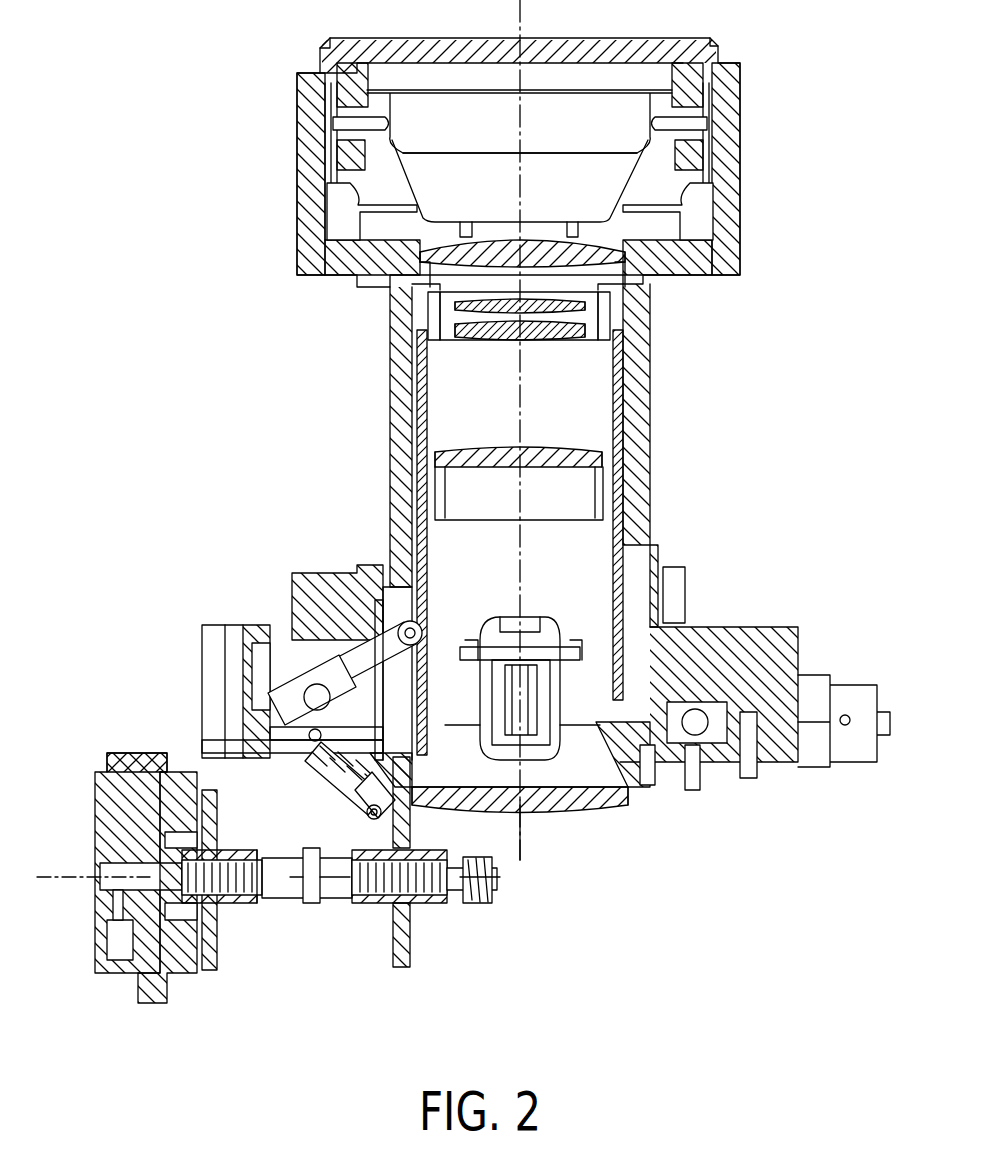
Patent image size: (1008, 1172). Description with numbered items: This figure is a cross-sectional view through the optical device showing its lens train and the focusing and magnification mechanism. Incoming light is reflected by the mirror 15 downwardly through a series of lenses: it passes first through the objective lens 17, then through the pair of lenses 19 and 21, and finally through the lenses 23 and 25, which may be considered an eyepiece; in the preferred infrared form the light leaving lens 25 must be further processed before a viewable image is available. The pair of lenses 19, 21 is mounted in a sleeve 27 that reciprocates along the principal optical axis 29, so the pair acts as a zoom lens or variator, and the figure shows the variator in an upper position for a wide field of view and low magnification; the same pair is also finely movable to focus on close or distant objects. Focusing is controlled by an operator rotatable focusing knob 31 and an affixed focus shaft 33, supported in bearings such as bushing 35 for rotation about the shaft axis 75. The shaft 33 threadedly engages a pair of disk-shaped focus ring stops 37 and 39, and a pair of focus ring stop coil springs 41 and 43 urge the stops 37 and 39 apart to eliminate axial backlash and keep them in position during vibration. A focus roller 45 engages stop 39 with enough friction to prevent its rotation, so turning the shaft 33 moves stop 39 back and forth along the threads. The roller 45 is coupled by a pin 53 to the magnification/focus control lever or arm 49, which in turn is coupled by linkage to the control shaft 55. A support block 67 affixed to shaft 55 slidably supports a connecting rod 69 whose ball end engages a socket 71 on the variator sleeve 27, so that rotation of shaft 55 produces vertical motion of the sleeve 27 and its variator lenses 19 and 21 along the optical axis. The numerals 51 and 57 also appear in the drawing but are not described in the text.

The mirror 15 is at (479, 135).
The objective lens 17 is at (660, 282).
The lens 19 is at (455, 302).
The lens 21 is at (460, 336).
The lens 23 is at (578, 452).
The lens 25 is at (608, 805).
The sleeve 27 is at (625, 380).
The principal optical axis 29 is at (525, 842).
The focusing knob 31 is at (100, 797).
The focus shaft 33 is at (433, 895).
The bushing 35 is at (493, 895).
The focus ring stop 37 is at (210, 960).
The focus ring stop 39 is at (402, 968).
The focus ring stop coil spring 41 is at (258, 905).
The focus ring stop coil spring 43 is at (328, 905).
The focus roller 45 is at (412, 838).
The magnification/focus control lever 49 is at (322, 768).
The support plate 51 is at (300, 735).
The pin 53 is at (366, 816).
The control shaft 55 is at (300, 700).
The spring retainer 57 is at (352, 796).
The support block 67 is at (320, 632).
The connecting rod 69 is at (262, 680).
The socket 71 is at (400, 622).
The shaft axis 75 is at (64, 880).